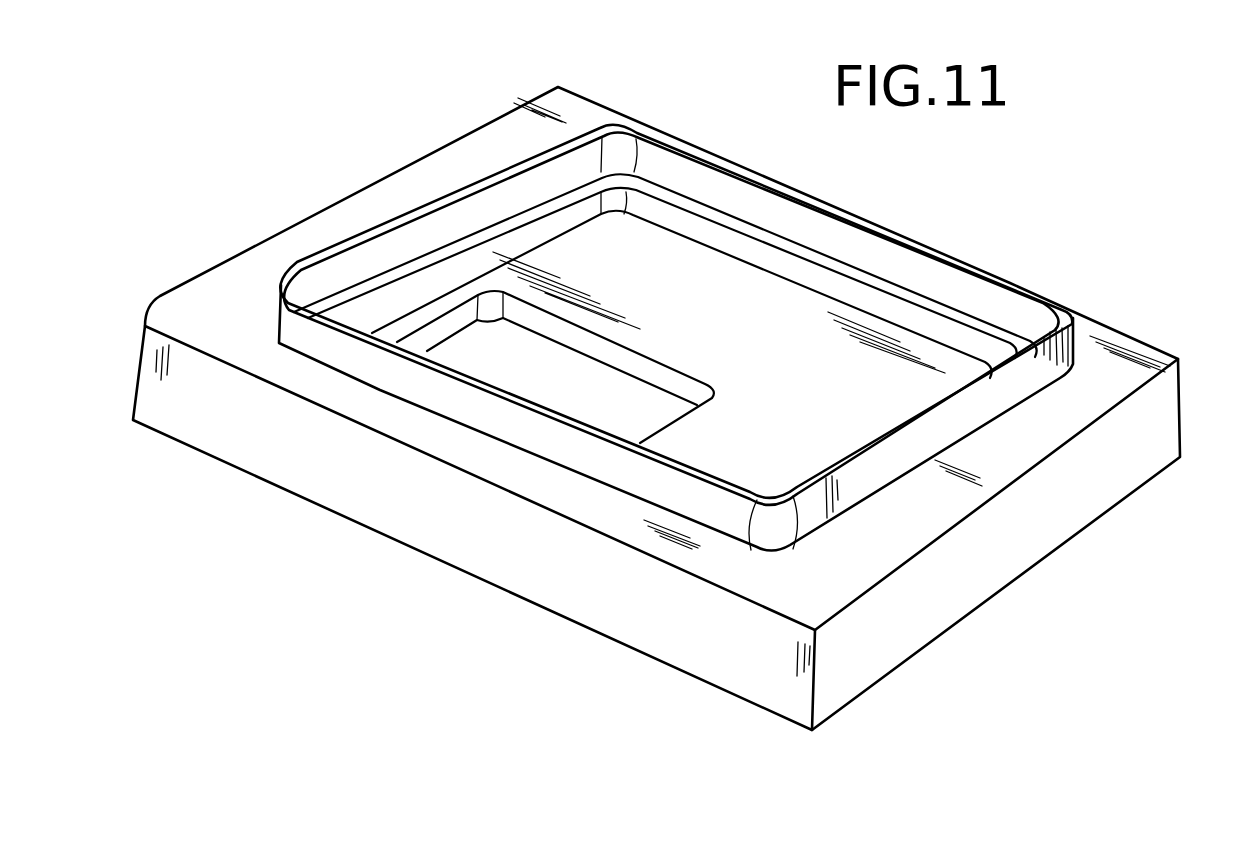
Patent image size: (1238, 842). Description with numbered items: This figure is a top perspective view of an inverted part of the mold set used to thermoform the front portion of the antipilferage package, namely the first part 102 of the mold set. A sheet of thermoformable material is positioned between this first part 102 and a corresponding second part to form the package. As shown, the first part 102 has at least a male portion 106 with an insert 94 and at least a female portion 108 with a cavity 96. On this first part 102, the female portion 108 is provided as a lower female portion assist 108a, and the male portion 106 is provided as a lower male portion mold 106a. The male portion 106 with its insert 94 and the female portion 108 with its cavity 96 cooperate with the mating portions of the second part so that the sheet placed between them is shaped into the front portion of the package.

The insert 94 is at (942, 273).
The cavity 96 is at (755, 248).
The first part 102 is at (272, 192).
The male portion 106 is at (788, 205).
The lower male portion mold 106a is at (990, 398).
The female portion 108 is at (808, 292).
The lower female portion assist 108a is at (513, 258).